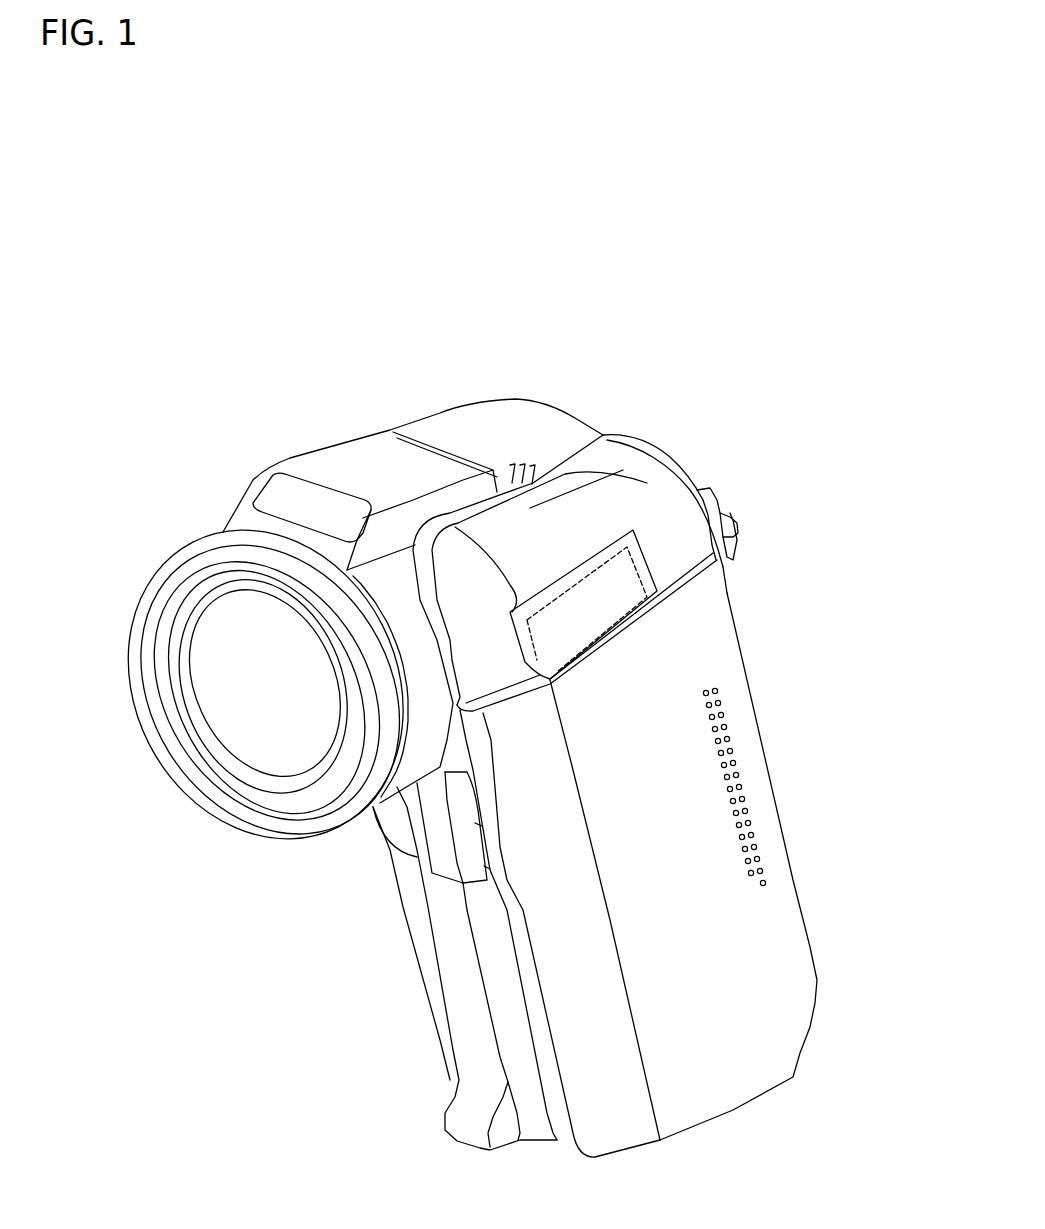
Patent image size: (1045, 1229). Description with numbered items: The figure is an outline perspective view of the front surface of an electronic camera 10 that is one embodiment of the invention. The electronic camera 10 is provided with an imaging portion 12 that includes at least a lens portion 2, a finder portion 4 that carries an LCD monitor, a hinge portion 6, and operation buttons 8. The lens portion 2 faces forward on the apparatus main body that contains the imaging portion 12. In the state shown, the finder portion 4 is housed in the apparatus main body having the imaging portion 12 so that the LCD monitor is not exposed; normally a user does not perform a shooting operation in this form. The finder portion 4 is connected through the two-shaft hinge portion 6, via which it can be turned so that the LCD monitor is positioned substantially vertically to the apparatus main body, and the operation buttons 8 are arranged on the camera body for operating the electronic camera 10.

The lens portion 2 is at (277, 750).
The finder portion 4 is at (767, 1037).
The hinge portion 6 is at (618, 607).
The operation buttons 8 is at (700, 395).
The electronic camera 10 is at (663, 251).
The imaging portion 12 is at (556, 370).